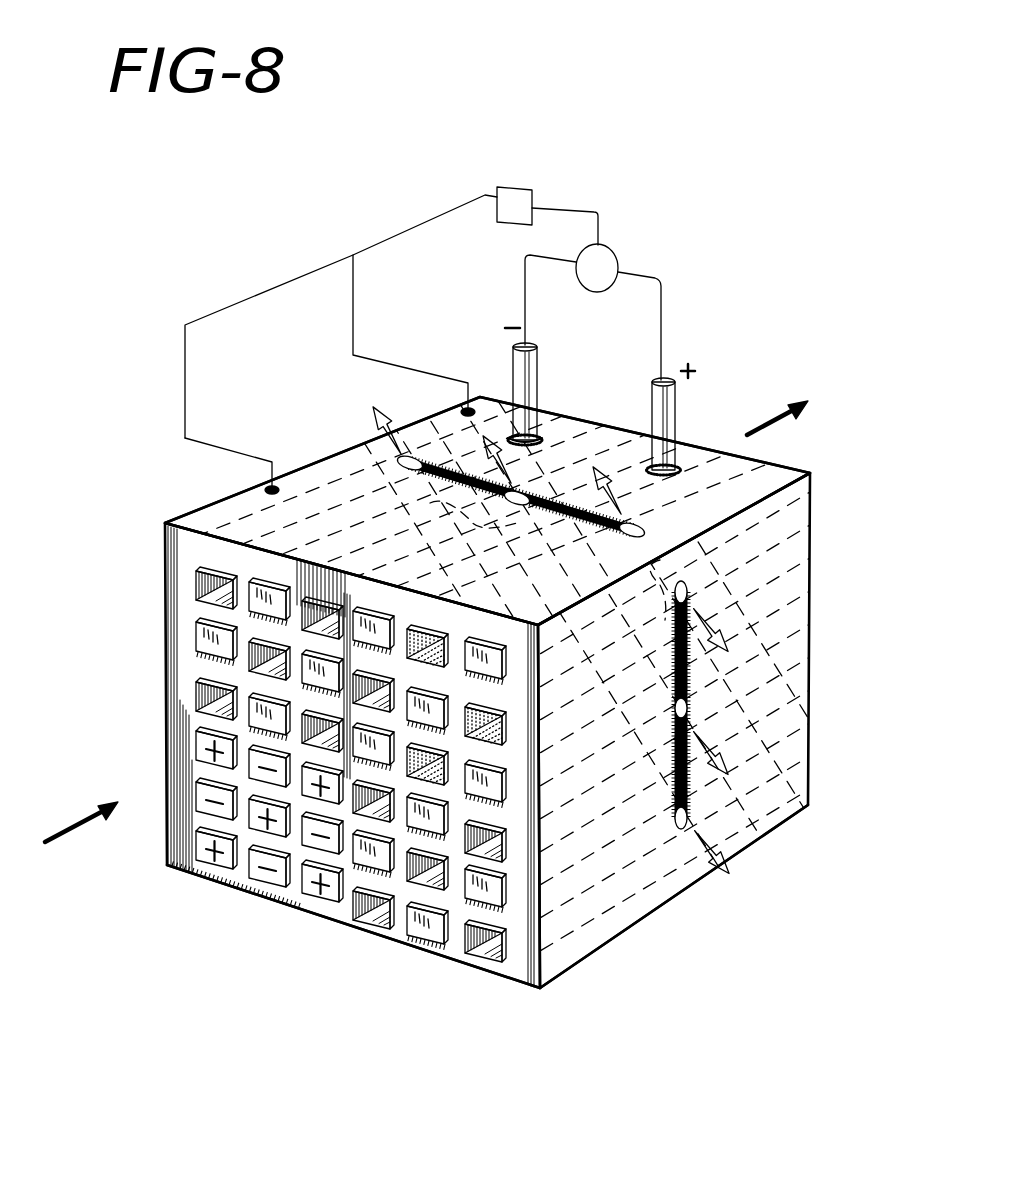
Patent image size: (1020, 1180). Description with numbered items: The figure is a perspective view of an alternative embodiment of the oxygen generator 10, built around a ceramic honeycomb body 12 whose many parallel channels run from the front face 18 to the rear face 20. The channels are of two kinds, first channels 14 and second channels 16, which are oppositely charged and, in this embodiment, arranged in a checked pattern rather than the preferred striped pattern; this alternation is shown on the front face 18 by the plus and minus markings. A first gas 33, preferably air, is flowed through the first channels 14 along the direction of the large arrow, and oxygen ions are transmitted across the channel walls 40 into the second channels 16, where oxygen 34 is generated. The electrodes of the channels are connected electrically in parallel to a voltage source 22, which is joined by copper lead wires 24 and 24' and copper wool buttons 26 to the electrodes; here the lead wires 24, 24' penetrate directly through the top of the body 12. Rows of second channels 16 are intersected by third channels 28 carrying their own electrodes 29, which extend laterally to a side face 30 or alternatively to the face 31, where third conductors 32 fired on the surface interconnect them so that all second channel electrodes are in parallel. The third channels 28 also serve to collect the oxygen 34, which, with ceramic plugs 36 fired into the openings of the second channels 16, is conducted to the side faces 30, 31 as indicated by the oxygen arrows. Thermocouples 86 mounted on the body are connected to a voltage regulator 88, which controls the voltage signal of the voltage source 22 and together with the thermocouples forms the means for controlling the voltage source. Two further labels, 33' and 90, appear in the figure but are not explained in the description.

The oxygen generator 10 is at (150, 492).
The ceramic honeycomb body 12 is at (233, 890).
The first channels 14 is at (196, 584).
The second channels 16 is at (318, 553).
The front face 18 is at (435, 955).
The rear face 20 is at (812, 537).
The voltage source 22 is at (622, 256).
The copper lead wire 24 is at (498, 367).
The copper lead wire 24' is at (701, 419).
The copper wool buttons 26 is at (545, 439).
The third channels 28 is at (428, 498).
The electrodes of the third channels 29 is at (400, 463).
The side face 30 is at (766, 812).
The side face 31 is at (301, 471).
The third conductors 32 is at (412, 488).
The first gas 33 is at (73, 804).
The direction arrow 33' is at (809, 422).
The oxygen 34 is at (372, 404).
The ceramic plugs 36 is at (196, 641).
The channel walls 40 is at (196, 730).
The thermocouples 86 is at (264, 489).
The voltage regulator 88 is at (521, 186).
The circuit wiring 90 is at (494, 234).